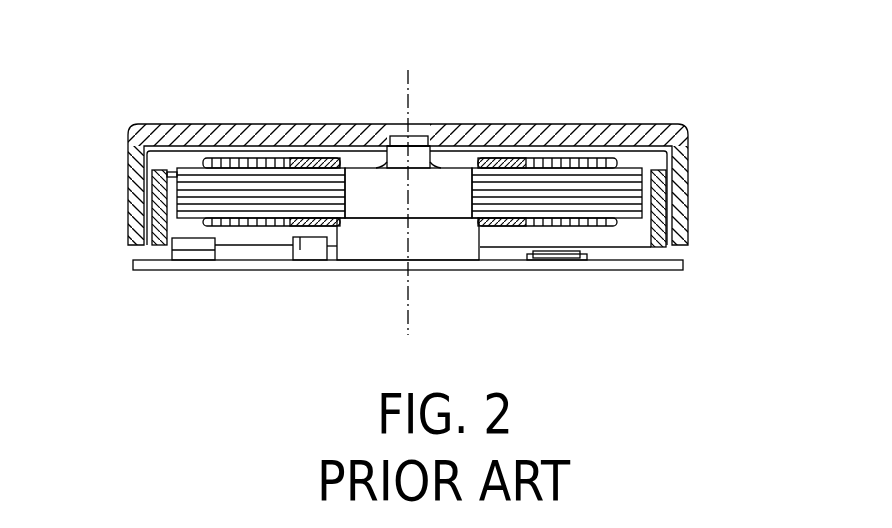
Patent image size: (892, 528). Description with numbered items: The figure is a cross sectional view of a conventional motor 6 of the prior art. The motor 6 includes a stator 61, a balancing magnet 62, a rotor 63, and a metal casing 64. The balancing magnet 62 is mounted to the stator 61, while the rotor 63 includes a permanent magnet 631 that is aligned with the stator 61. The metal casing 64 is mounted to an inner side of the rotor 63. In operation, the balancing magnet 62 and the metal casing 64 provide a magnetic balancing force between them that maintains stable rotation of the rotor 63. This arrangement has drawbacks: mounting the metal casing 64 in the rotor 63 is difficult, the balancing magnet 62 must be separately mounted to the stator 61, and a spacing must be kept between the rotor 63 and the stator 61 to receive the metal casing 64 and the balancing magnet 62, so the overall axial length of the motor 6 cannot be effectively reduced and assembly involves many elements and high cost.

The conventional motor 6 is at (398, 171).
The stator 61 is at (590, 185).
The balancing magnet 62 is at (330, 160).
The rotor 63 is at (503, 125).
The permanent magnet 631 is at (160, 244).
The metal casing 64 is at (235, 155).